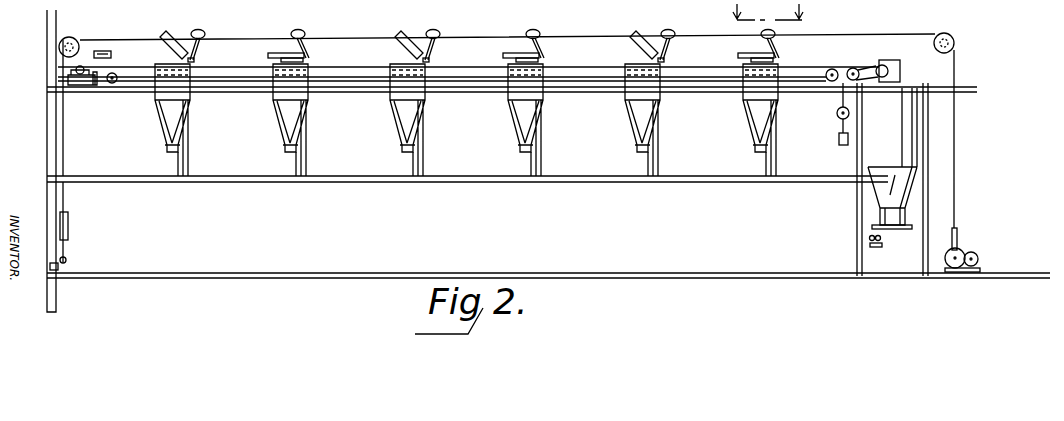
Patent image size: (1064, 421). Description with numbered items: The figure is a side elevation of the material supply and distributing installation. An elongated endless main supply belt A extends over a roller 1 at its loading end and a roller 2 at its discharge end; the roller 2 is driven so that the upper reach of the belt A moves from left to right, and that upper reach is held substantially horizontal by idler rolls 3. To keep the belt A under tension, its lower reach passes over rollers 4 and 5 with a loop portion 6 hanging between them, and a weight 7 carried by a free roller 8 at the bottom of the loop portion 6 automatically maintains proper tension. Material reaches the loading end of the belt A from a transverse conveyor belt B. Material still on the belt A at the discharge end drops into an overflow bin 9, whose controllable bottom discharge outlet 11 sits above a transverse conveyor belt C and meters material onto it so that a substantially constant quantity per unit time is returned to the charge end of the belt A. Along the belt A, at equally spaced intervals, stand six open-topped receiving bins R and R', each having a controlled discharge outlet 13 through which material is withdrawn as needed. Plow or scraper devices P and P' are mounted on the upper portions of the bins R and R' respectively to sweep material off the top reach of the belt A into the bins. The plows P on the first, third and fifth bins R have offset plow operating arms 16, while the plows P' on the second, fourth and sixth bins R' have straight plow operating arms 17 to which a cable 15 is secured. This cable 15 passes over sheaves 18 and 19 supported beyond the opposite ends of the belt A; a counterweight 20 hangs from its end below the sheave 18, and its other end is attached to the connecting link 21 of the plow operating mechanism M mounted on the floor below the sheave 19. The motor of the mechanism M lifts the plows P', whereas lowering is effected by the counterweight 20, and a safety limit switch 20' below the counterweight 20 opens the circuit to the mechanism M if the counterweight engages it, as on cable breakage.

The roller 1 is at (78, 70).
The roller 2 is at (895, 62).
The idler roll 3 is at (872, 71).
The roller 4 is at (857, 80).
The roller 5 is at (829, 82).
The loop portion 6 is at (836, 100).
The weight 7 is at (838, 142).
The free roller 8 is at (850, 117).
The overflow bin 9 is at (913, 137).
The bottom discharge outlet 11 is at (872, 227).
The controlled discharge outlet 13 is at (167, 150).
The cable 15 is at (270, 36).
The offset plow operating arm 16 is at (205, 38).
The straight plow operating arm 17 is at (302, 42).
The sheave 18 is at (62, 38).
The sheave 19 is at (955, 43).
The counterweight 20 is at (83, 226).
The safety limit switch 20' is at (80, 264).
The connecting link 21 is at (958, 240).
The main supply belt A is at (147, 66).
The transverse conveyor belt B is at (105, 51).
The transverse conveyor belt C is at (882, 240).
The plow operating mechanism M is at (975, 252).
The plow P is at (404, 32).
The plow P' is at (505, 35).
The receiving bin R is at (395, 120).
The receiving bin R' is at (509, 120).